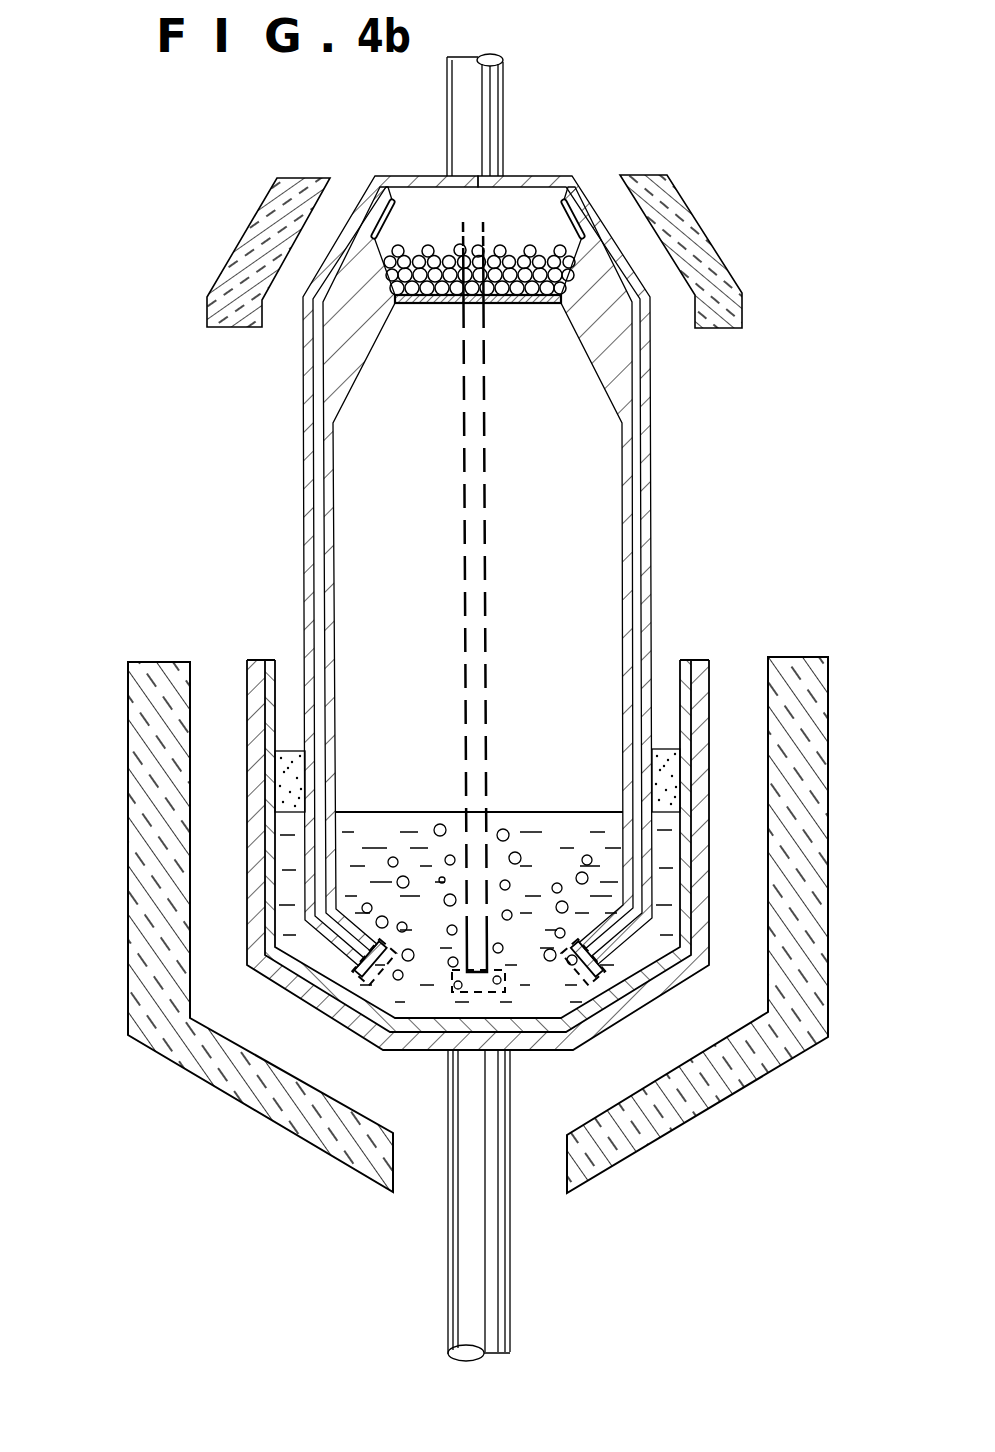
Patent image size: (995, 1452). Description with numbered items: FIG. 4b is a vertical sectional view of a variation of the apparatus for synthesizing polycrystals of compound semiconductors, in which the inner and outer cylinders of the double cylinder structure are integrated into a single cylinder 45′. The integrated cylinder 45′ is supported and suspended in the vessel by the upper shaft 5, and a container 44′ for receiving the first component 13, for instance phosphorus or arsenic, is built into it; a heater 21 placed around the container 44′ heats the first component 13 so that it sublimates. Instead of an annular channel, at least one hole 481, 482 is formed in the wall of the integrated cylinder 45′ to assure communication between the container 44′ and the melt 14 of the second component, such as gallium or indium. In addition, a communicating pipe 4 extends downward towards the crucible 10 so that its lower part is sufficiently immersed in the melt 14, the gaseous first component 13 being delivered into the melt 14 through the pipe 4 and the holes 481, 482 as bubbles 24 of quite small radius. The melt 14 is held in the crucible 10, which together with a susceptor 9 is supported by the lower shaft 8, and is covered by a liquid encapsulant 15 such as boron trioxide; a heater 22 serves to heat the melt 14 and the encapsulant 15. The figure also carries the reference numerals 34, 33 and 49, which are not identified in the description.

The upper shaft 5 is at (490, 130).
The heater 21 is at (290, 187).
The container 44′ is at (393, 200).
The integrated cylinder 45′ is at (650, 456).
The first component 13 is at (513, 287).
The hole 482 is at (312, 380).
The hole 481 is at (633, 395).
The crucible 34 is at (355, 447).
The communicating pipe 4 is at (498, 465).
The heater 22 is at (150, 683).
The crucible 10 is at (260, 685).
The susceptor 9 is at (695, 680).
The liquid encapsulant 15 is at (292, 755).
The melt surface 33 is at (394, 808).
The bubbles 24 is at (505, 832).
The melt 14 is at (548, 983).
The end connector 49 is at (372, 978).
The lower shaft 8 is at (492, 1287).